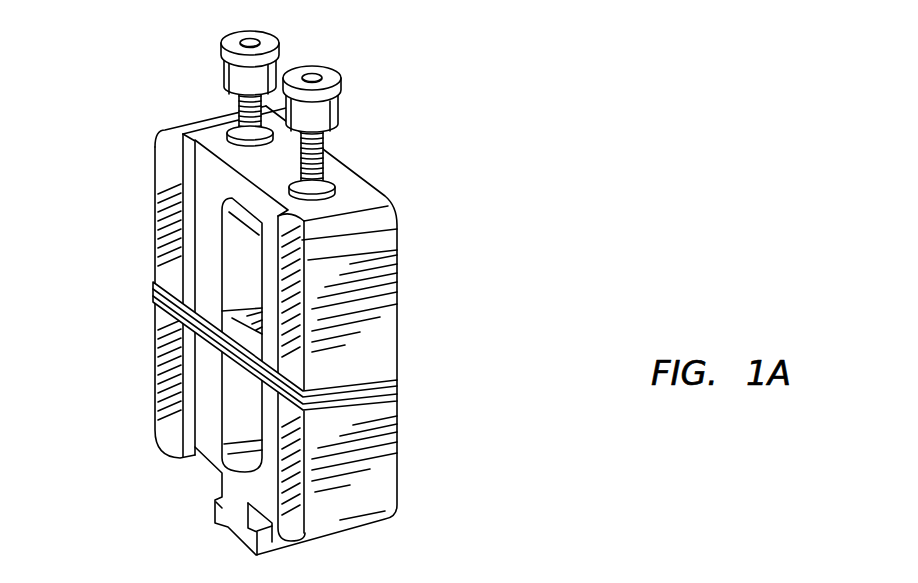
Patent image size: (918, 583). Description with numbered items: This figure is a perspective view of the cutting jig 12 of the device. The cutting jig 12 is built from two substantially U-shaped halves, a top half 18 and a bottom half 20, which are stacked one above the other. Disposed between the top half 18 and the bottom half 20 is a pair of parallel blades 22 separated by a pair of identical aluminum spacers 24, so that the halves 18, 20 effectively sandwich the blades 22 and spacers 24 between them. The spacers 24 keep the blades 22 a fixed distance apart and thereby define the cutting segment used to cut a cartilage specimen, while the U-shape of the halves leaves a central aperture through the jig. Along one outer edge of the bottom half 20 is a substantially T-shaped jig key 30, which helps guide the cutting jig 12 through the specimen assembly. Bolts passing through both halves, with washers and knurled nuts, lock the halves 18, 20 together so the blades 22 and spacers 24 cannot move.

The cutting jig 12 is at (458, 307).
The top half 18 is at (360, 236).
The bottom half 20 is at (302, 437).
The parallel blades 22 is at (305, 322).
The aluminum spacers 24 is at (153, 285).
The jig key 30 is at (230, 527).